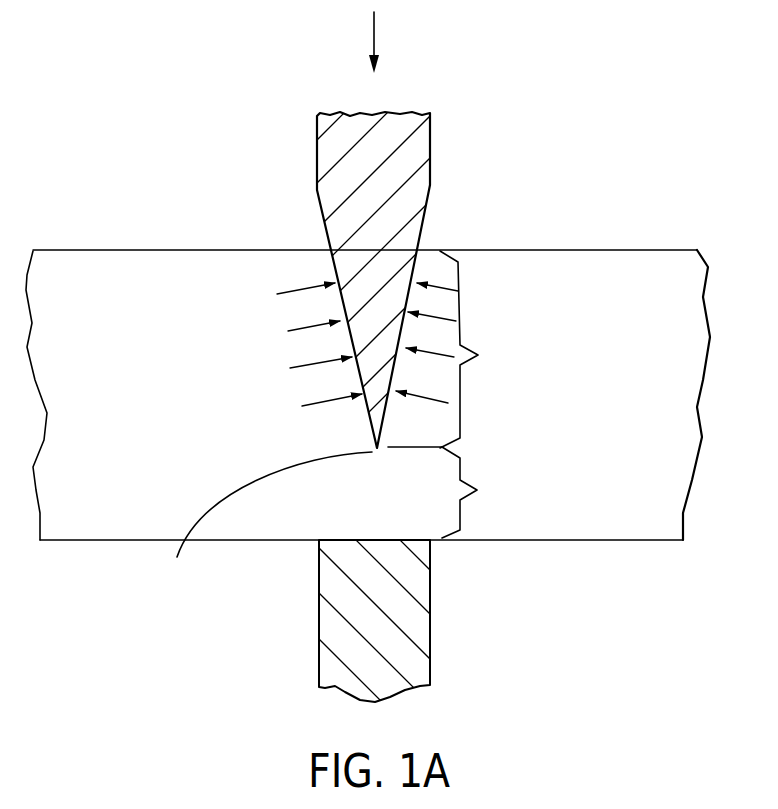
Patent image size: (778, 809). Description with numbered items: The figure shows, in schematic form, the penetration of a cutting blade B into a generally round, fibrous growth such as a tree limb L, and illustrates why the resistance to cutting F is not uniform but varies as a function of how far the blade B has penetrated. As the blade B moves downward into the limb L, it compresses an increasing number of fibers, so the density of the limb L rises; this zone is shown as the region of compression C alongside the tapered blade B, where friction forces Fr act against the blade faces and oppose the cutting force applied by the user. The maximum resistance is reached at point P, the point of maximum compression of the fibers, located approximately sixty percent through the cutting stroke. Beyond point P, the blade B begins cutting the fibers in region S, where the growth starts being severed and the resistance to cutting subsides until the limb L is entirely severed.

The resistance to cutting F is at (384, 42).
The cutting blade B is at (489, 290).
The tree limb L is at (103, 300).
The friction forces Fr is at (367, 331).
The region of compression C is at (469, 349).
The region of severing S is at (443, 492).
The point of maximum compression P is at (268, 520).